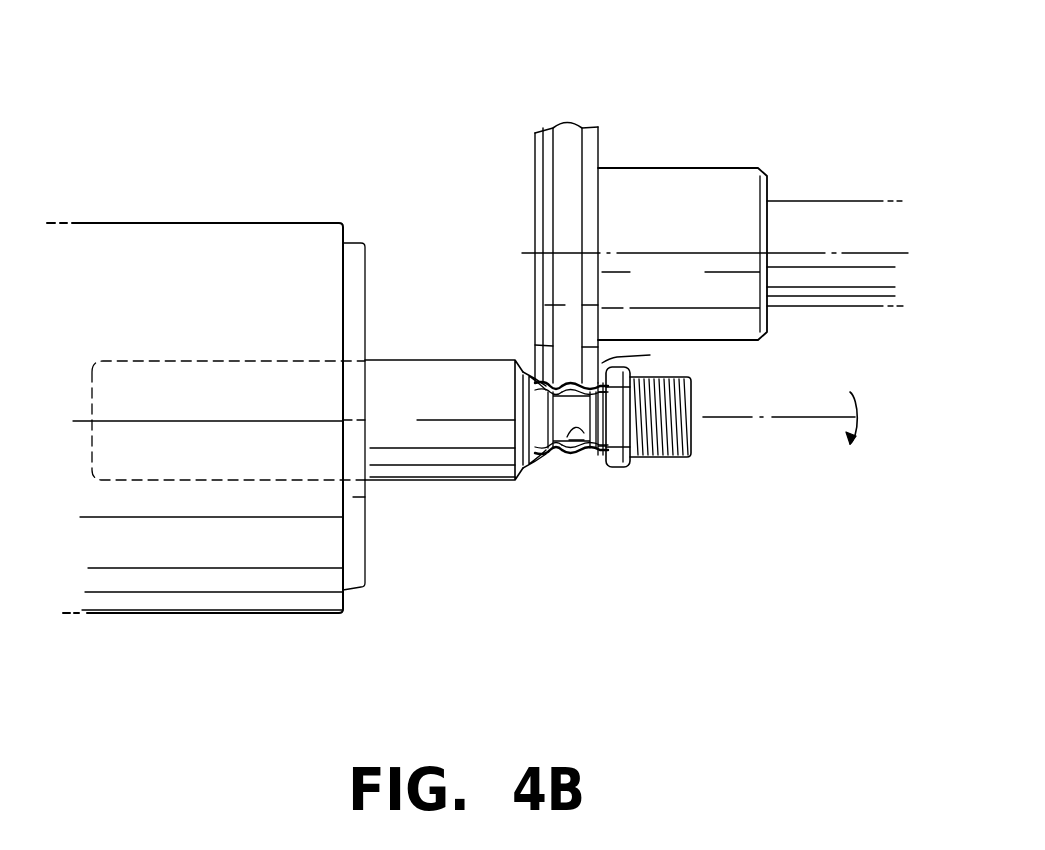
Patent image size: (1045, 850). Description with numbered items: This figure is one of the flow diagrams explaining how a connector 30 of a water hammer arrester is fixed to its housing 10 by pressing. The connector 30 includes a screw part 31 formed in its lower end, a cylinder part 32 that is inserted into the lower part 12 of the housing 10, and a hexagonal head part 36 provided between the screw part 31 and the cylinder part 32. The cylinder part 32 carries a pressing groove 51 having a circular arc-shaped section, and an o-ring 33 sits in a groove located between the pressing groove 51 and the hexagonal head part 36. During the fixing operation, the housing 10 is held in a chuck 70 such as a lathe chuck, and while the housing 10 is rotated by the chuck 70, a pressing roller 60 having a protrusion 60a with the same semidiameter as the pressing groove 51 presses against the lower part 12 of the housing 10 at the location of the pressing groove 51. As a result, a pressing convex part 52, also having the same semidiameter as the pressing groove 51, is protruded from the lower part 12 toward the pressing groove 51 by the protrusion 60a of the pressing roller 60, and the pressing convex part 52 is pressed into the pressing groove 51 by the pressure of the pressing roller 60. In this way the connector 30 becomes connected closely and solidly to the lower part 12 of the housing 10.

The chuck 70 is at (226, 233).
The housing 10 is at (403, 367).
The cylinder part 32 is at (546, 396).
The pressing convex part 52 is at (560, 456).
The pressing groove 51 is at (572, 455).
The hexagonal head part 36 is at (618, 462).
The lower part of the housing 12 is at (594, 458).
The connector 30 is at (730, 509).
The screw part 31 is at (660, 465).
The o-ring 33 is at (650, 355).
The pressing roller 60 is at (568, 130).
The protrusion 60a is at (567, 182).